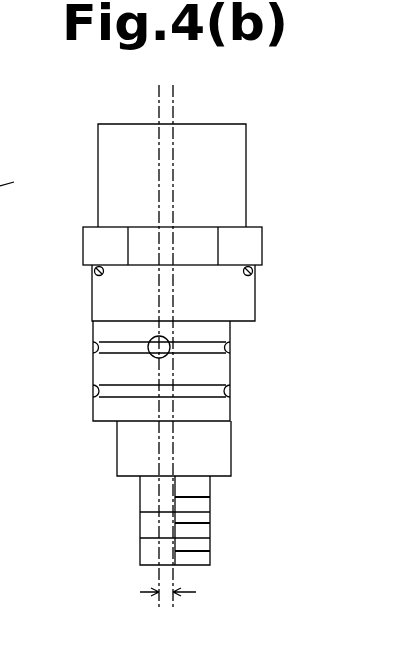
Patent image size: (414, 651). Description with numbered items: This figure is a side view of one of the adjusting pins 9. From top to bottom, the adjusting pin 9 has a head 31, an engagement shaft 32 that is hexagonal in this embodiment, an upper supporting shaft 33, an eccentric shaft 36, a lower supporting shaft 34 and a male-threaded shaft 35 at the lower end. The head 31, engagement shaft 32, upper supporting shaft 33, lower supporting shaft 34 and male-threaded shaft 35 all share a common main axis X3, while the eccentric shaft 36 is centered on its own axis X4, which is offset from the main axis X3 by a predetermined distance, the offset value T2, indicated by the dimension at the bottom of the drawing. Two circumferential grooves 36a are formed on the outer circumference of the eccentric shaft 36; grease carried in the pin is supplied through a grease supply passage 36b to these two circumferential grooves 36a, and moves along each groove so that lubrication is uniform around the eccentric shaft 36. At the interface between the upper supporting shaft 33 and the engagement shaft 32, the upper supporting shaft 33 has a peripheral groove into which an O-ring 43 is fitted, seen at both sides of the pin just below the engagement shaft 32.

The adjusting pin 9 is at (258, 150).
The head 31 is at (238, 191).
The engagement shaft 32 is at (255, 245).
The O-ring 43 is at (253, 272).
The upper supporting shaft 33 is at (248, 305).
The eccentric shaft 36 is at (220, 373).
The circumferential grooves 36a is at (118, 388).
The grease supply passage 36b is at (154, 344).
The lower supporting shaft 34 is at (226, 447).
The male-threaded shaft 35 is at (140, 518).
The axis of the eccentric shaft X4 is at (160, 578).
The main axis X3 is at (175, 578).
The offset value T2 is at (168, 616).